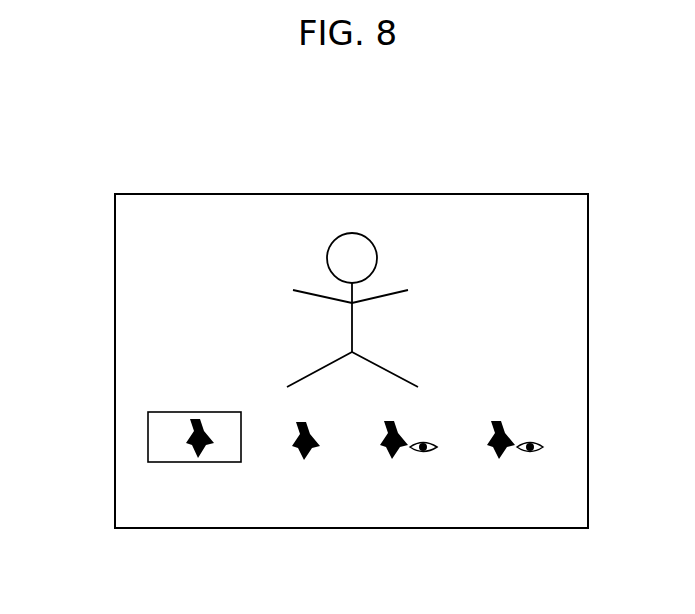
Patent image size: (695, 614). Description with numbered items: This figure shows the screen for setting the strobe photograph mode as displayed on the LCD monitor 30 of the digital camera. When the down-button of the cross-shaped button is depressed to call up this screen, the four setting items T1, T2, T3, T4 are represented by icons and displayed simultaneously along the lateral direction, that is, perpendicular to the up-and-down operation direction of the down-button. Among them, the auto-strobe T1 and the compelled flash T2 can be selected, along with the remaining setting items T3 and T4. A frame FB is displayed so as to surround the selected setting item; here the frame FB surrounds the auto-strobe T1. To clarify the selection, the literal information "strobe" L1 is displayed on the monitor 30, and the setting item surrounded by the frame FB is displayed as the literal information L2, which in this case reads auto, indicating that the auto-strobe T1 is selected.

The LCD monitor 30 is at (100, 147).
The literal information "strobe" L1 is at (412, 313).
The literal information L2 is at (400, 340).
The frame FB is at (147, 432).
The auto-strobe T1 is at (180, 453).
The compelled flash T2 is at (300, 465).
The setting item T3 is at (407, 458).
The setting item T4 is at (513, 458).